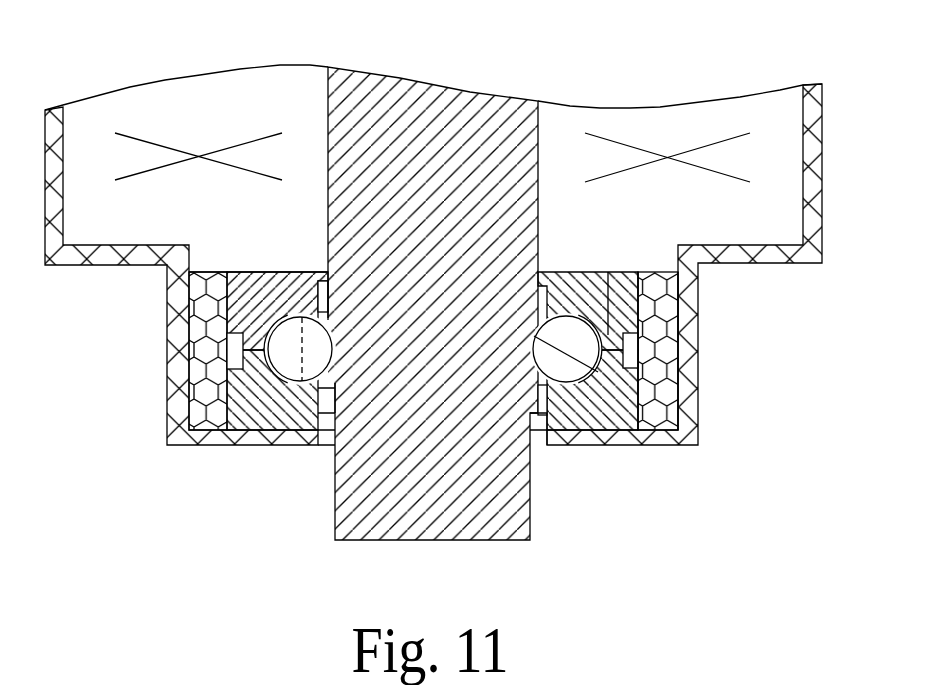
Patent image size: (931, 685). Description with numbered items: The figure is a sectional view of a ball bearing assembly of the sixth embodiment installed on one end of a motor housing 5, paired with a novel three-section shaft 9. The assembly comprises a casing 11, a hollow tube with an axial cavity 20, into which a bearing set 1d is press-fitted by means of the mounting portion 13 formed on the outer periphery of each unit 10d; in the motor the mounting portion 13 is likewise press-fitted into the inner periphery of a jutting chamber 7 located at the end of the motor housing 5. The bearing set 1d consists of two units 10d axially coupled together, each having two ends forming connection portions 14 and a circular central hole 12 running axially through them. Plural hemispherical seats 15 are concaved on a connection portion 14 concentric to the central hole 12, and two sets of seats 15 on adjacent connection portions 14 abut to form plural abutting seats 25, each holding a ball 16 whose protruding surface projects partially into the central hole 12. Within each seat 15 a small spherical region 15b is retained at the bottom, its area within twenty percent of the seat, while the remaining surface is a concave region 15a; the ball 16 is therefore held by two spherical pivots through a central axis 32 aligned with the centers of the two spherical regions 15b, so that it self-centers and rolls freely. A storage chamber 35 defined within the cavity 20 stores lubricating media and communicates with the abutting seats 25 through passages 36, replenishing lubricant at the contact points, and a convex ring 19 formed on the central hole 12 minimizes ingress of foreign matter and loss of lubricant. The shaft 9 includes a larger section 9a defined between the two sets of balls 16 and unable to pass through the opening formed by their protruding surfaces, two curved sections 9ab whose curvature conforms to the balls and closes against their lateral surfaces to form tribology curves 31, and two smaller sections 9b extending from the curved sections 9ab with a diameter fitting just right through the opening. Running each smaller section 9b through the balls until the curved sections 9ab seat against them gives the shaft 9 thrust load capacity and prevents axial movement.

The bearing set 1d is at (179, 416).
The motor housing 5 is at (55, 118).
The jutting chamber 7 is at (690, 365).
The three-section shaft 9 is at (442, 291).
The larger section 9a is at (497, 163).
The smaller section 9b is at (463, 488).
The curved section 9ab is at (327, 316).
The unit 10d is at (255, 295).
The casing 11 is at (652, 332).
The central hole 12 is at (345, 392).
The mounting portion 13 is at (652, 276).
The connection portion 14 is at (595, 358).
The seat 15 is at (220, 416).
The concave region 15a is at (223, 443).
The spherical region 15b is at (261, 427).
The ball 16 is at (287, 337).
The convex ring 19 is at (543, 421).
The cavity 20 is at (240, 272).
The abutting seat 25 is at (598, 425).
The tribology curve 31 is at (645, 400).
The central axis 32 is at (313, 335).
The storage chamber 35 is at (673, 405).
The passage 36 is at (602, 338).